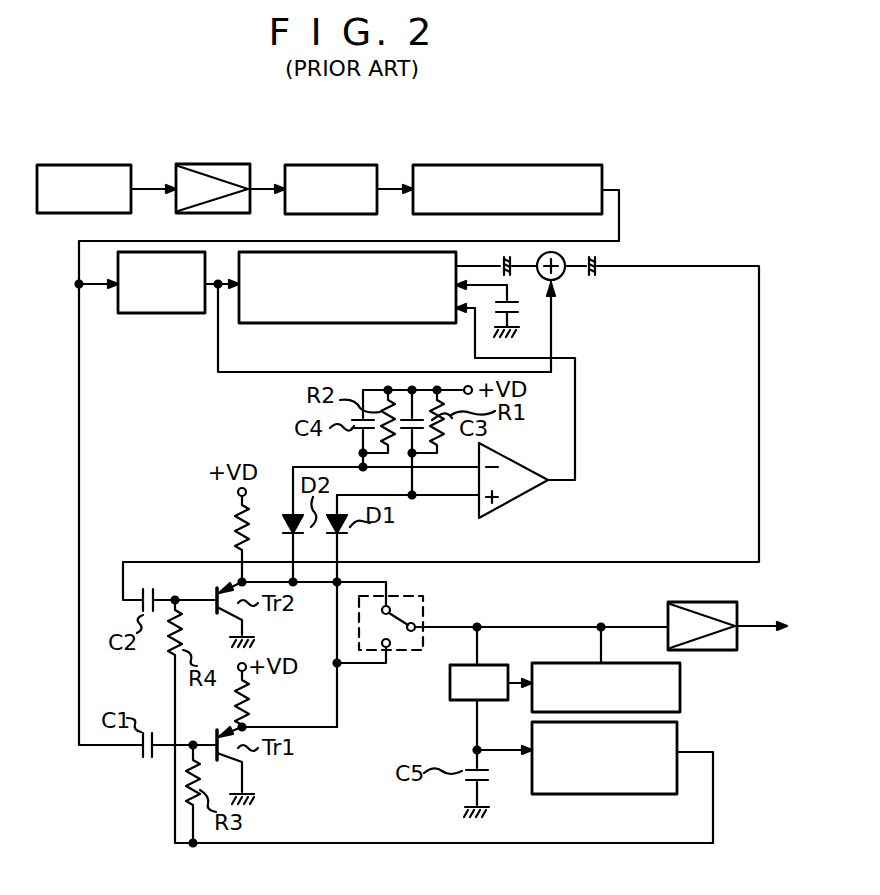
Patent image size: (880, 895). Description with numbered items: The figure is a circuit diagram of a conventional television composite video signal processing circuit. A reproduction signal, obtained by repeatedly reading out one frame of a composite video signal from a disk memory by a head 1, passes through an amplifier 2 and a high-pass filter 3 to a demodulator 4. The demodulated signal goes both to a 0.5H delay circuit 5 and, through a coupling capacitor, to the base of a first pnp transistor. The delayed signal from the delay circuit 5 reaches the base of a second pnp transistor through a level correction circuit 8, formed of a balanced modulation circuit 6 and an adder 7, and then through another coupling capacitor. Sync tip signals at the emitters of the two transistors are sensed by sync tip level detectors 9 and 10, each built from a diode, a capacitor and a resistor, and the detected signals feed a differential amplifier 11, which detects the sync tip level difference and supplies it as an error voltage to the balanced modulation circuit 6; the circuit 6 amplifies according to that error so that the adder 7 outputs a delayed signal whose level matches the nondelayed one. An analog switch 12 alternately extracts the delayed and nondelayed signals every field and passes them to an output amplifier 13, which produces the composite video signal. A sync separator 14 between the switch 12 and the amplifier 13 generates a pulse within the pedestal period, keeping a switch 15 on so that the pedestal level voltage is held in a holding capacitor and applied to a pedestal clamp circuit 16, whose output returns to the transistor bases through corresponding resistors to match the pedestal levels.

The head 1 is at (90, 164).
The amplifier 2 is at (212, 164).
The high-pass filter 3 is at (337, 164).
The demodulator 4 is at (602, 169).
The 0.5H delay circuit 5 is at (167, 315).
The balanced modulation circuit 6 is at (322, 322).
The adder 7 is at (561, 280).
The level correction circuit 8 is at (584, 322).
The sync tip level detector 9 is at (422, 475).
The sync tip level detector 10 is at (344, 453).
The differential amplifier 11 is at (508, 503).
The analog switch 12 is at (424, 614).
The output amplifier 13 is at (720, 650).
The sync separator 14 is at (680, 672).
The switch 15 is at (448, 686).
The pedestal clamp circuit 16 is at (613, 795).